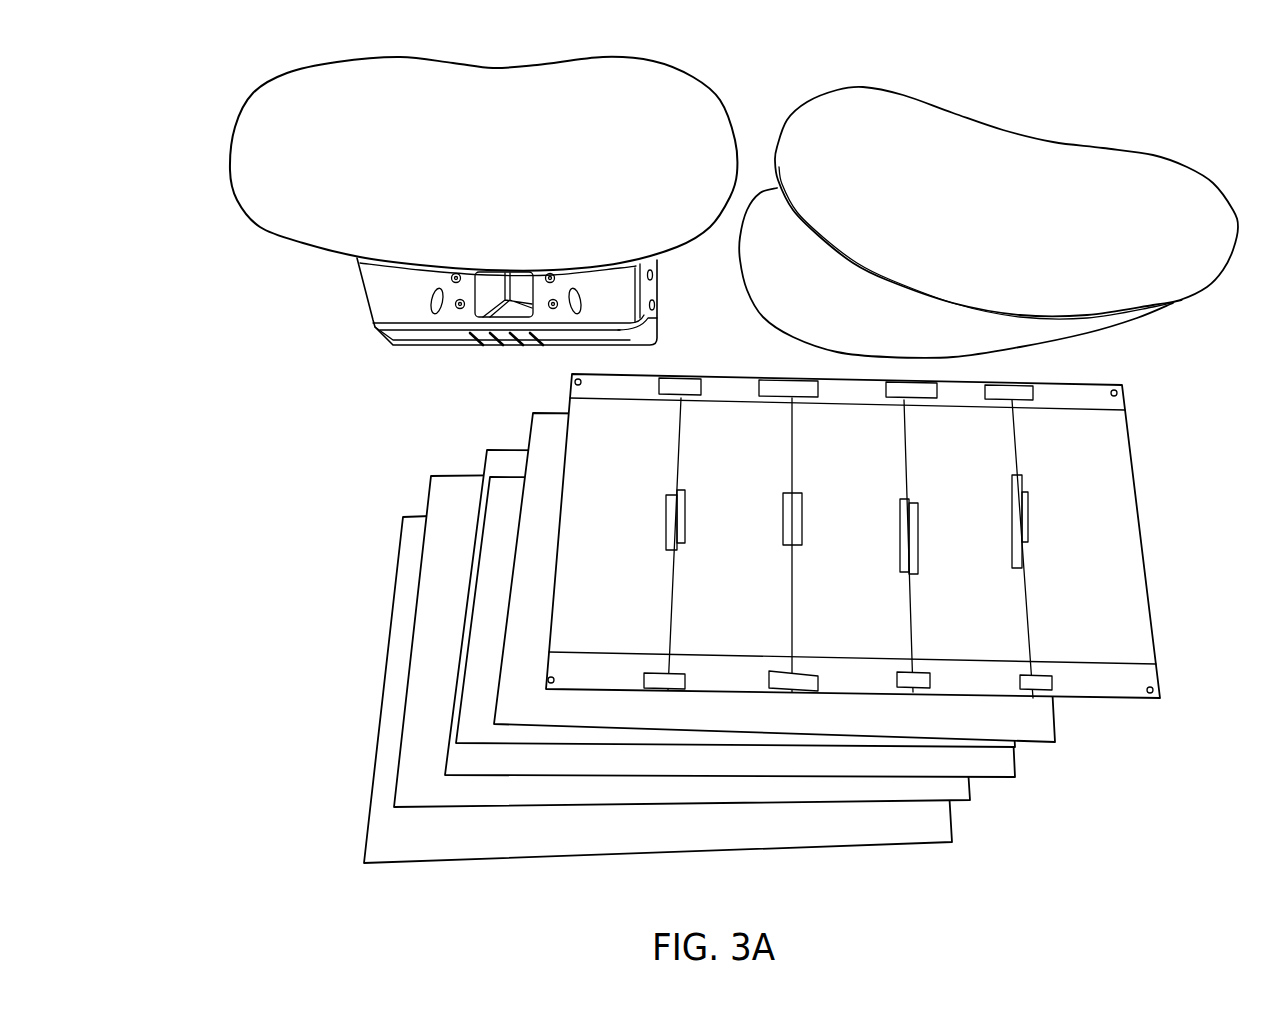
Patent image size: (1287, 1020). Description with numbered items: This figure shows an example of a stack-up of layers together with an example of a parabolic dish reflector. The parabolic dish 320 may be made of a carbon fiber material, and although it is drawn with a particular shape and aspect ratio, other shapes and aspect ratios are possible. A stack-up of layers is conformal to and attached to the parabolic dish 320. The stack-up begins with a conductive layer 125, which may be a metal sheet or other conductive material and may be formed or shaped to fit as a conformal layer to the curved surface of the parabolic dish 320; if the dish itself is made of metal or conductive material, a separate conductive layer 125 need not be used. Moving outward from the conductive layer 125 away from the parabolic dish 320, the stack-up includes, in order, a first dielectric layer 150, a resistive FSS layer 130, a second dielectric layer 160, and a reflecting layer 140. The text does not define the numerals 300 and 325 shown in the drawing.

The keyboard assembly 300 is at (243, 74).
The parabolic dish 320 is at (687, 83).
The pad 325 is at (1052, 160).
The conductive layer 125 is at (940, 830).
The first dielectric layer 150 is at (970, 792).
The resistive FSS layer 130 is at (1005, 764).
The second dielectric layer 160 is at (1047, 712).
The reflecting layer 140 is at (1105, 478).